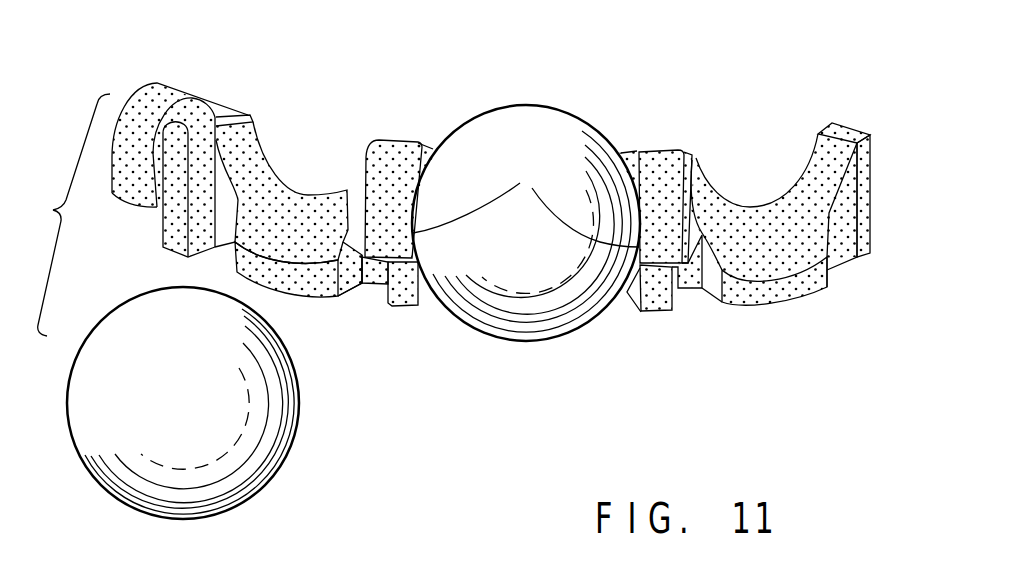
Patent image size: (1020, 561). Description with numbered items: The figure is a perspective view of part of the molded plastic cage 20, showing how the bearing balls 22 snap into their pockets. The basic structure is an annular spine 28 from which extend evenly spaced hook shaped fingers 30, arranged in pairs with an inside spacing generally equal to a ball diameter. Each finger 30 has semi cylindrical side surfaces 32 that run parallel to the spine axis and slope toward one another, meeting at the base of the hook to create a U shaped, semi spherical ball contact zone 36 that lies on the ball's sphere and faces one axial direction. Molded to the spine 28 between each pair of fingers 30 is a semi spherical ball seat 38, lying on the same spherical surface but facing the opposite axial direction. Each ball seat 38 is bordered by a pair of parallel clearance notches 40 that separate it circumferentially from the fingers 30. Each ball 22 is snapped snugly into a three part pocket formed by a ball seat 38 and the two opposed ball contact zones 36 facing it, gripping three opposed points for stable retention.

The cage 20 is at (864, 124).
The bearing balls 22 is at (538, 122).
The annular spine 28 is at (797, 294).
The hook shaped fingers 30 is at (177, 80).
The side surface 32 is at (344, 192).
The ball contact zone 36 is at (209, 108).
The ball seat 38 is at (287, 213).
The clearance notches 40 is at (223, 237).